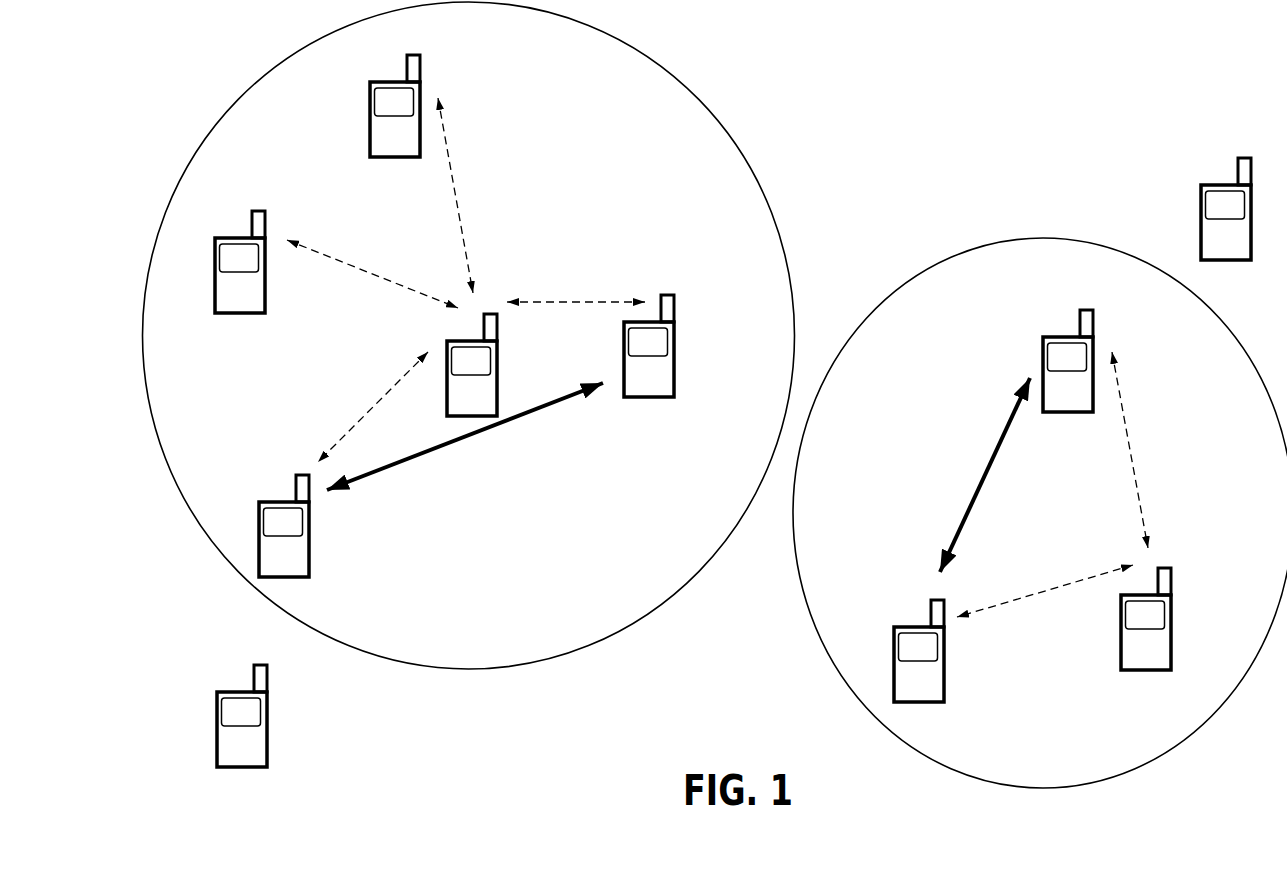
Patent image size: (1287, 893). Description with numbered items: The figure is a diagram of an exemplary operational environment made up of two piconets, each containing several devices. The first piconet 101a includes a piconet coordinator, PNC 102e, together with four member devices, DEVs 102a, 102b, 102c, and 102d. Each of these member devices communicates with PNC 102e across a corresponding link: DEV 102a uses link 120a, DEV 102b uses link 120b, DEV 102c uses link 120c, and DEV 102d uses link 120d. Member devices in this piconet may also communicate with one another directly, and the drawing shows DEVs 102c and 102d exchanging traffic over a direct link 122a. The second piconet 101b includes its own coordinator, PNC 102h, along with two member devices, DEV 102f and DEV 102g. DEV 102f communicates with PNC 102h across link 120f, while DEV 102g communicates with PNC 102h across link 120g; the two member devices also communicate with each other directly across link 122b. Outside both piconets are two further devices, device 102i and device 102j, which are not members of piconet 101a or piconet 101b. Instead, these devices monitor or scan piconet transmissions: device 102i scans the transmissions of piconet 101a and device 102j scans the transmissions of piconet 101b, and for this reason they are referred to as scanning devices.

The piconet 101a is at (672, 78).
The piconet 101b is at (1080, 240).
The member device (DEV) 102a is at (265, 232).
The member device (DEV) 102b is at (420, 75).
The member device (DEV) 102c is at (296, 483).
The member device (DEV) 102d is at (673, 316).
The piconet coordinator (PNC) 102e is at (497, 360).
The member device (DEV) 102f is at (944, 620).
The member device (DEV) 102g is at (1093, 330).
The piconet coordinator (PNC) 102h is at (1171, 612).
The scanning device 102i is at (268, 688).
The scanning device 102j is at (1200, 195).
The link 120a is at (340, 262).
The link 120b is at (456, 197).
The link 120c is at (378, 398).
The link 120d is at (597, 300).
The link 120f is at (1003, 602).
The link 120g is at (1128, 450).
The direct link 122a is at (526, 413).
The link 122b is at (993, 455).